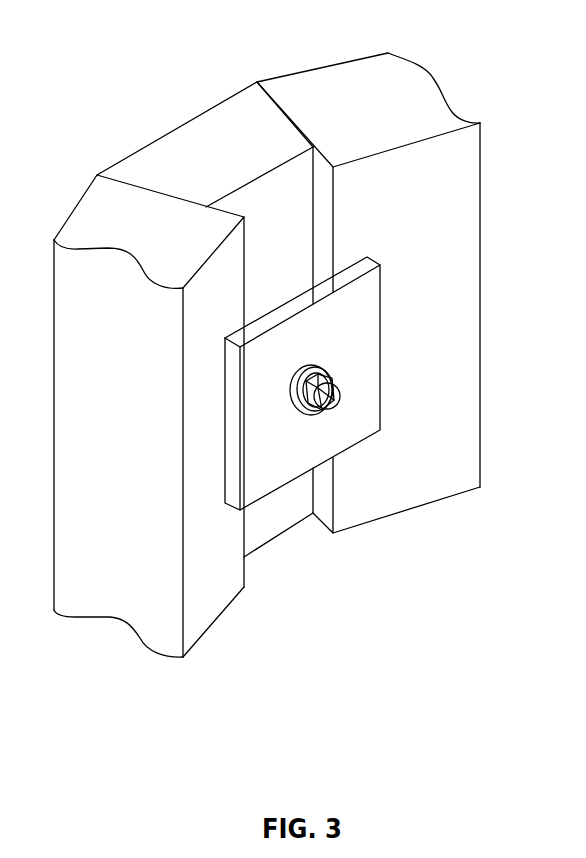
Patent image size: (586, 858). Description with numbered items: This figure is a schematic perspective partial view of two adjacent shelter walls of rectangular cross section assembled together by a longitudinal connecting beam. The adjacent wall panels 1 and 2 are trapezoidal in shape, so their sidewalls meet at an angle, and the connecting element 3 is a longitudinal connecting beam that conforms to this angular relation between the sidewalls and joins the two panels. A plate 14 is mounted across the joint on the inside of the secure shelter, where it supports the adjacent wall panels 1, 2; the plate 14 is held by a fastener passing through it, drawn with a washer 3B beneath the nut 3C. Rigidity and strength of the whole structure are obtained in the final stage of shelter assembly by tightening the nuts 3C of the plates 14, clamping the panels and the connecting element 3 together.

The wall panel 1 is at (367, 117).
The wall panel 2 is at (95, 222).
The connecting element 3 is at (210, 143).
The plate 14 is at (343, 318).
The washer 3B is at (327, 370).
The nut 3C is at (328, 393).